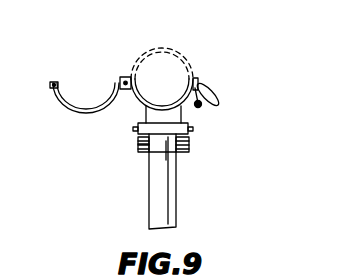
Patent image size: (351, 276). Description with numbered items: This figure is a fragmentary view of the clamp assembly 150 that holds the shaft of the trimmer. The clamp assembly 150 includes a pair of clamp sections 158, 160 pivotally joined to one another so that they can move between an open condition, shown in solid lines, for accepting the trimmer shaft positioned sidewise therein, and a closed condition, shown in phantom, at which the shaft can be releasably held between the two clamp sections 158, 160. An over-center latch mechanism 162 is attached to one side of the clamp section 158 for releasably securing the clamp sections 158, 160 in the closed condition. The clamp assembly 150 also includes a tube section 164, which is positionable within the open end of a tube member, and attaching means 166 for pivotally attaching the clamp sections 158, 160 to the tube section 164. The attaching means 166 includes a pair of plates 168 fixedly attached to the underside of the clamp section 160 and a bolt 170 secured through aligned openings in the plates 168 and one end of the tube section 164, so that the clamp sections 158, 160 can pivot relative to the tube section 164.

The clamp assembly 150 is at (223, 46).
The clamp section 158 is at (192, 110).
The clamp section 160 is at (167, 47).
The over-center latch mechanism 162 is at (215, 97).
The tube section 164 is at (172, 207).
The attaching means 166 is at (205, 148).
The plates 168 is at (143, 156).
The bolt 170 is at (137, 145).